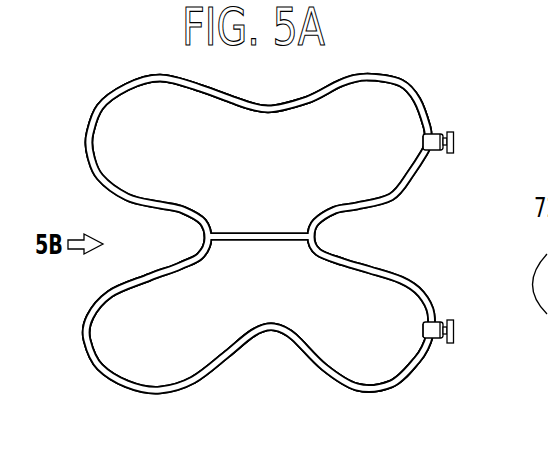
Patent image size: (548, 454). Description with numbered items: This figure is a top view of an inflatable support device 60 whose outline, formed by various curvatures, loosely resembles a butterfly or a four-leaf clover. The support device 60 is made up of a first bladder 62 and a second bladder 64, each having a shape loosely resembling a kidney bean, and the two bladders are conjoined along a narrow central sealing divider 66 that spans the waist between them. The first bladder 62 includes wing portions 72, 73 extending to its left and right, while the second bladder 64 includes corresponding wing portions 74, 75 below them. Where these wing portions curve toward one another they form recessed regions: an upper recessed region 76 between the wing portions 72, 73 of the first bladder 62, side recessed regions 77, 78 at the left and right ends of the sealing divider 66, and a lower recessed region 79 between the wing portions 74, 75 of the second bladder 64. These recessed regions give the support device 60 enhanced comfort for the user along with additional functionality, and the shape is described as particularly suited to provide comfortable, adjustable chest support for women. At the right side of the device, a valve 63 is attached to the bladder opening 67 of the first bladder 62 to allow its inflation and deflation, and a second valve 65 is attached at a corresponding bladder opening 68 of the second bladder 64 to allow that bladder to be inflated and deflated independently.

The support device 60 is at (445, 97).
The first bladder 62 is at (270, 172).
The valve 63 is at (458, 143).
The second bladder 64 is at (270, 302).
The valve 65 is at (459, 334).
The sealing divider 66 is at (249, 228).
The bladder opening 67 is at (423, 147).
The second terminal end 68 is at (423, 337).
The wing portion 72 is at (132, 105).
The wing portion 73 is at (386, 99).
The wing portion 74 is at (128, 355).
The wing portion 75 is at (388, 367).
The upper recessed region 76 is at (258, 97).
The side recessed region 77 is at (191, 240).
The side recessed region 78 is at (347, 242).
The lower recessed region 79 is at (263, 360).